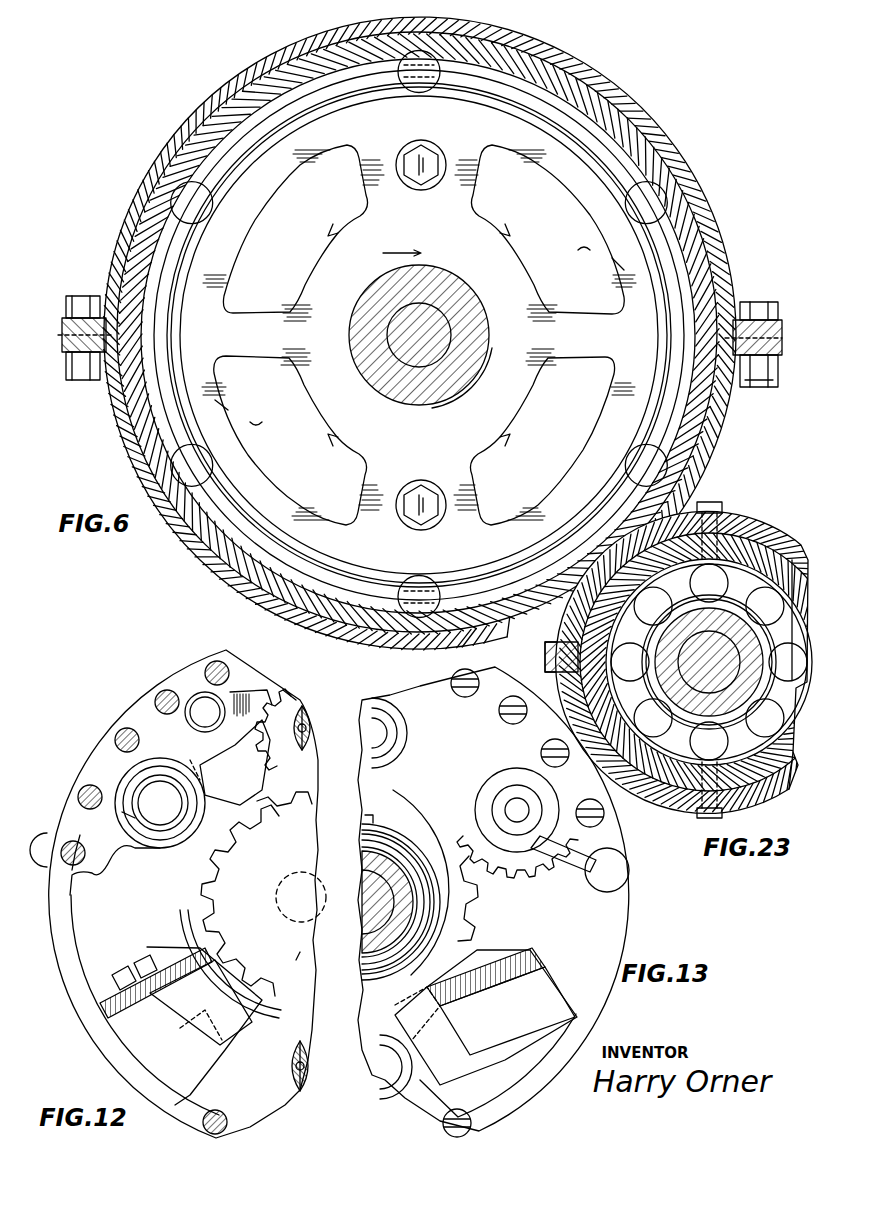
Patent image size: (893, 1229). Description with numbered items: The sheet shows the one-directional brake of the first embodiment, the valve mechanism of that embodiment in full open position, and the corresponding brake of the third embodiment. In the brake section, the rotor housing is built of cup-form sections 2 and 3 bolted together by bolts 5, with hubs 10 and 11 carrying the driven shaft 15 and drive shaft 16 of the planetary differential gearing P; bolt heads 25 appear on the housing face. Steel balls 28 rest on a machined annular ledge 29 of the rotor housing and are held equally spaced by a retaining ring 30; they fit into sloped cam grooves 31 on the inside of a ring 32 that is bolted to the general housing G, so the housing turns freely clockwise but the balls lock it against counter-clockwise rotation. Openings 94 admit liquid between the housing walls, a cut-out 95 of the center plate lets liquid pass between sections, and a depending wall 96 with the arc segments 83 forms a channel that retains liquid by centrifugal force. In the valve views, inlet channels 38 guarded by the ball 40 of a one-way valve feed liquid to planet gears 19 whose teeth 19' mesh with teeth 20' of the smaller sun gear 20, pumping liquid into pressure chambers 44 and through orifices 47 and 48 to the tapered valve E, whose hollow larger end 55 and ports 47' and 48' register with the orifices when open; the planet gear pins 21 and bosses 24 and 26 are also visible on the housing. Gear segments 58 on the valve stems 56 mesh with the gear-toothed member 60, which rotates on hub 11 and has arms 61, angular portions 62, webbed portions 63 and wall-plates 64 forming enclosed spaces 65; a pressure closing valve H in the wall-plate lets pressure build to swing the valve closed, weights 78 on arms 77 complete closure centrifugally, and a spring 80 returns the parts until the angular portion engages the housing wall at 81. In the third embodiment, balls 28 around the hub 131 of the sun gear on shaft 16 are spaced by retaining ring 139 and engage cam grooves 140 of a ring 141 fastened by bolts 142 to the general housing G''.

In FIG. 6, the general housing G is at (433, 334).
In FIG. 6, the ring 32 is at (125, 278).
In FIG. 6, the cam grooves 31 is at (172, 220).
In FIG. 6, the retaining ring 30 is at (229, 178).
In FIG. 6, the annular ledge 29 is at (185, 263).
In FIG. 6, the steel balls 28 is at (210, 200).
In FIG. 23, the steel balls 28 is at (632, 641).
In FIG. 6, the rotor housing section 2 is at (419, 335).
In FIG. 6, the openings 94 is at (338, 232).
In FIG. 6, the cut-out 95 is at (584, 247).
In FIG. 6, the depending wall 96 is at (618, 262).
In FIG. 6, the hub 10 is at (476, 306).
In FIG. 6, the driven shaft 15 is at (392, 358).
In FIG. 6, the bolt 25 is at (430, 160).
In FIG. 23, the general housing G'' is at (708, 661).
In FIG. 23, the cam grooves 140 is at (736, 580).
In FIG. 23, the retaining ring 139 is at (638, 704).
In FIG. 23, the hub 131 is at (709, 662).
In FIG. 23, the drive shaft 16 is at (700, 712).
In FIG. 12, the drive shaft 16 is at (305, 906).
In FIG. 13, the drive shaft 16 is at (368, 888).
In FIG. 23, the bolts 142 is at (723, 506).
In FIG. 23, the ring 141 is at (789, 778).
In FIG. 12, the rotor housing section 3 is at (95, 1030).
In FIG. 13, the rotor housing section 3 is at (600, 945).
In FIG. 12, the arc segments 83 is at (130, 1062).
In FIG. 13, the arc segments 83 is at (520, 1082).
In FIG. 12, the enclosed spaces 65 is at (87, 940).
In FIG. 12, the bolts 5 is at (127, 727).
In FIG. 13, the bolts 5 is at (513, 697).
In FIG. 12, the ball 40 is at (200, 700).
In FIG. 12, the inlet channels 38 is at (252, 690).
In FIG. 12, the larger end / hollow portion 55 is at (135, 780).
In FIG. 12, the valve E is at (165, 757).
In FIG. 12, the port 47' is at (160, 803).
In FIG. 12, the orifices 47 is at (188, 757).
In FIG. 12, the port 48' is at (109, 822).
In FIG. 12, the orifices 48 is at (115, 870).
In FIG. 12, the weights 78 is at (46, 850).
In FIG. 13, the weights 78 is at (630, 872).
In FIG. 12, the pressure chambers 44 is at (262, 802).
In FIG. 12, the teeth 19' is at (296, 677).
In FIG. 12, the planet gears 19 is at (317, 872).
In FIG. 12, the pin head 21 is at (310, 722).
In FIG. 12, the boss 24 is at (312, 737).
In FIG. 13, the boss 24 is at (389, 733).
In FIG. 12, the sun gear 20 is at (256, 894).
In FIG. 13, the sun gear 20 is at (468, 898).
In FIG. 12, the teeth 20' is at (215, 955).
In FIG. 12, the rotor housing wall stop 81 is at (175, 950).
In FIG. 13, the rotor housing wall stop 81 is at (510, 950).
In FIG. 12, the differential gearing P is at (306, 960).
In FIG. 12, the pressure closing valve H is at (120, 975).
In FIG. 12, the wall-plates 64 is at (160, 1010).
In FIG. 13, the wall-plates 64 is at (540, 1003).
In FIG. 12, the webbed portions 63 is at (185, 1005).
In FIG. 13, the webbed portions 63 is at (507, 1011).
In FIG. 12, the angular portions 62 is at (180, 1028).
In FIG. 13, the hub 11 is at (366, 862).
In FIG. 13, the gear-toothed member 60 is at (420, 822).
In FIG. 13, the spring 80 is at (365, 815).
In FIG. 13, the gear segments 58 is at (510, 786).
In FIG. 13, the stem 56 is at (527, 806).
In FIG. 13, the arms 77 is at (572, 857).
In FIG. 13, the arms 61 is at (437, 1028).
In FIG. 13, the boss 26 is at (377, 1086).